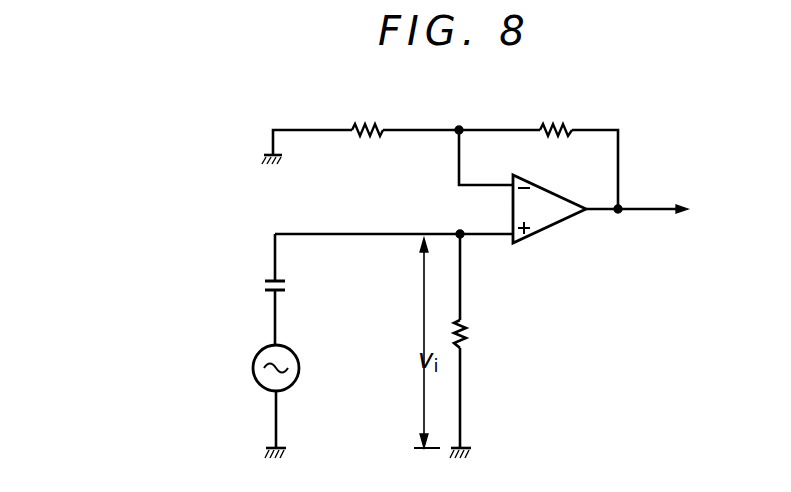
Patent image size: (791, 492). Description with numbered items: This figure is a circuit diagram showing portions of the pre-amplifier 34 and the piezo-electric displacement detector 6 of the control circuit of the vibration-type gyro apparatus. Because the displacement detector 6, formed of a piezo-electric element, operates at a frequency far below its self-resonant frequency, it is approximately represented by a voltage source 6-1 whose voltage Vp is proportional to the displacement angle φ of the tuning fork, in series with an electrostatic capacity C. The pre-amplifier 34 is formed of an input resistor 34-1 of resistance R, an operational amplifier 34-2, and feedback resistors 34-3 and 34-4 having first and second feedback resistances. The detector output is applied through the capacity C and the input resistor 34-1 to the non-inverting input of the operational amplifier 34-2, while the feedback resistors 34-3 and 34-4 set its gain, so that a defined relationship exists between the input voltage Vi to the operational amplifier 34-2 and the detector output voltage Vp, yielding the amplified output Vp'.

The pre-amplifier 34 is at (496, 267).
The input resistor 34-1 is at (465, 345).
The operational amplifier 34-2 is at (550, 227).
The feedback resistor 34-3 is at (366, 124).
The feedback resistor 34-4 is at (556, 124).
The displacement detector 6 is at (272, 346).
The voltage source 6-1 is at (297, 381).